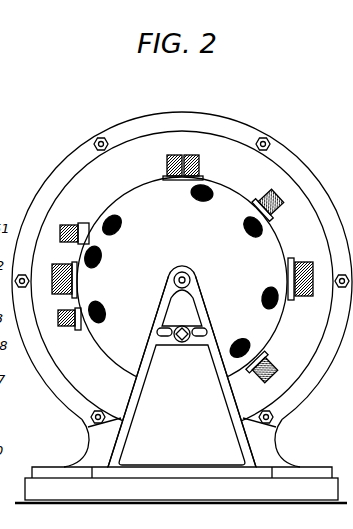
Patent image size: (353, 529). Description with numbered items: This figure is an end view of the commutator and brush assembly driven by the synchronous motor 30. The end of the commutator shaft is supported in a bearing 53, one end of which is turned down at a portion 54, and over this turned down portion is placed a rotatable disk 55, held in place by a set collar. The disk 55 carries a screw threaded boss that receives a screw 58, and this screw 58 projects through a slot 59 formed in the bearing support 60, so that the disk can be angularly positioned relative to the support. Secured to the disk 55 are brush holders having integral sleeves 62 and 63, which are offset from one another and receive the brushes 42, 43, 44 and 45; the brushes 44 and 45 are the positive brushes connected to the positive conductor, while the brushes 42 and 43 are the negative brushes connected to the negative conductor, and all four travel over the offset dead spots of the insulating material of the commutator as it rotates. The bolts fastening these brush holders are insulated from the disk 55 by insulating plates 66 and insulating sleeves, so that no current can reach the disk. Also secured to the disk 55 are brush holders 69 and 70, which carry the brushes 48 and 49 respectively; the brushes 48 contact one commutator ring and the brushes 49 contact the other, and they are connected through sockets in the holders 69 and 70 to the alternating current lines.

The motor 30 is at (73, 158).
The brush 42 is at (200, 158).
The brush 43 is at (165, 176).
The brush 44 is at (57, 270).
The brush 45 is at (78, 283).
The brushes 48 is at (66, 327).
The brushes 49 is at (70, 225).
The bearing 53 is at (185, 272).
The turned down portion 54 is at (193, 280).
The rotatable disk 55 is at (135, 325).
The screw 58 is at (180, 343).
The slot 59 is at (201, 337).
The bearing support 60 is at (134, 397).
The sleeve 62 is at (163, 176).
The sleeve 63 is at (204, 177).
The insulating plates 66 is at (203, 204).
The brush holder 69 is at (80, 330).
The brush holder 70 is at (87, 222).